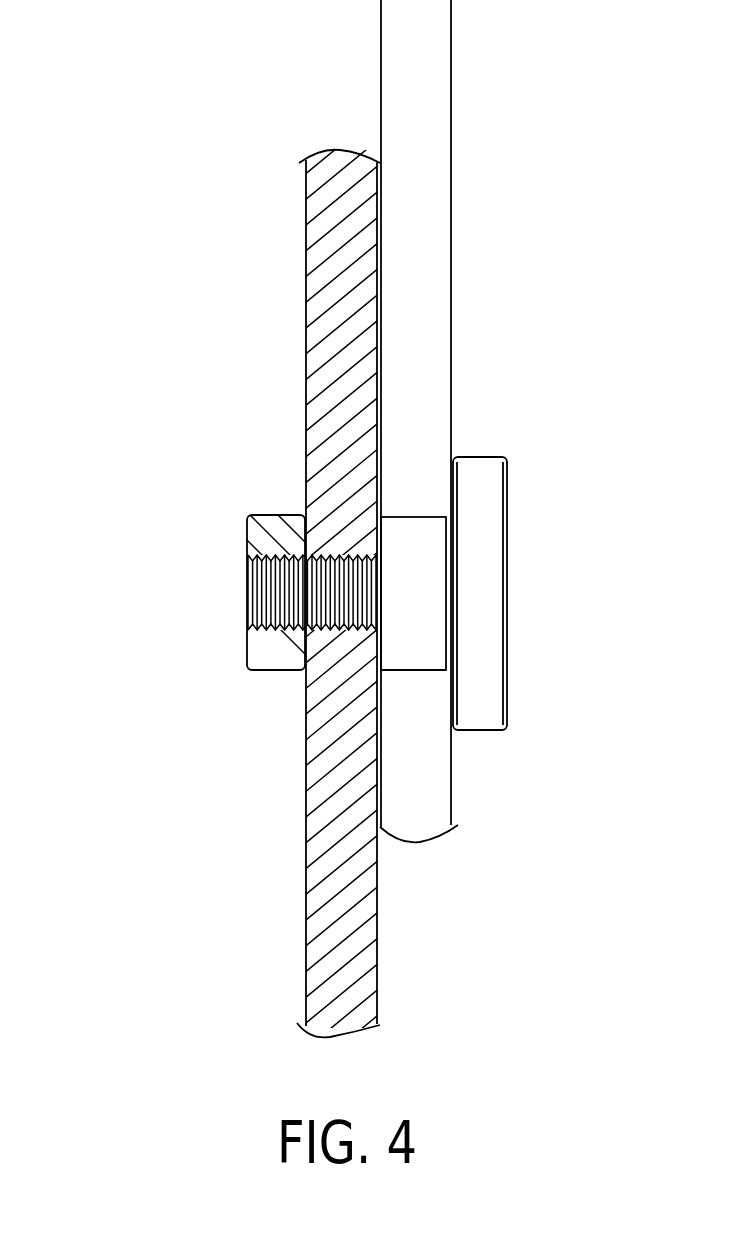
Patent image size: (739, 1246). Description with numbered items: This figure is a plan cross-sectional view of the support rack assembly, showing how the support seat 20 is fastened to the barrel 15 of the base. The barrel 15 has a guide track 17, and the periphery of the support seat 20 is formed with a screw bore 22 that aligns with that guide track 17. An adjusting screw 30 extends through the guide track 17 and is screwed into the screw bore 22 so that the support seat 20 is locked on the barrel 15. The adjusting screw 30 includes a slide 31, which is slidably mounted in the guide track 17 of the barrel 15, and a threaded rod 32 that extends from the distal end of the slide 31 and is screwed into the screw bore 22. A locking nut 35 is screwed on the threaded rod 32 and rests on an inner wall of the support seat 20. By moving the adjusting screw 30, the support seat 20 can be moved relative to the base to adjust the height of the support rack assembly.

The barrel 15 is at (418, 258).
The support seat 20 is at (332, 358).
The screw bore 22 is at (345, 556).
The locking nut 35 is at (257, 538).
The threaded rod 32 is at (255, 610).
The slide 31 is at (422, 543).
The adjusting screw 30 is at (477, 637).
The guide track 17 is at (415, 670).